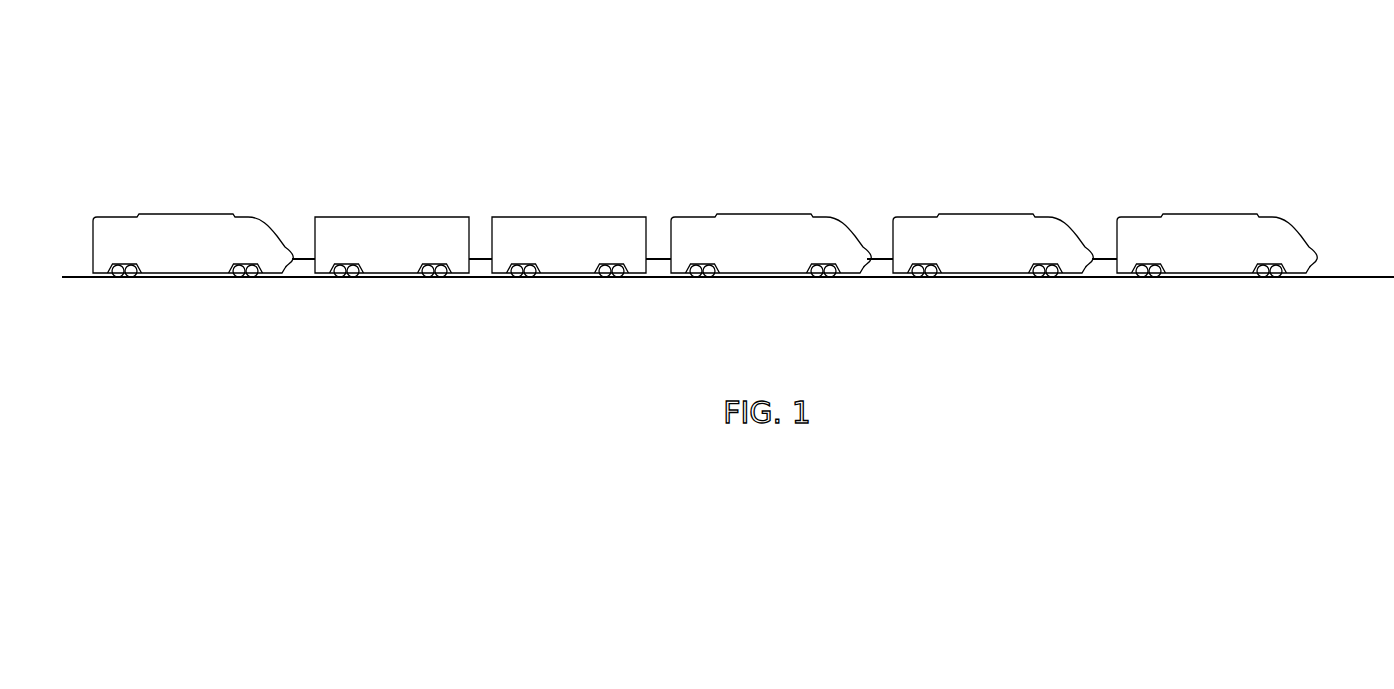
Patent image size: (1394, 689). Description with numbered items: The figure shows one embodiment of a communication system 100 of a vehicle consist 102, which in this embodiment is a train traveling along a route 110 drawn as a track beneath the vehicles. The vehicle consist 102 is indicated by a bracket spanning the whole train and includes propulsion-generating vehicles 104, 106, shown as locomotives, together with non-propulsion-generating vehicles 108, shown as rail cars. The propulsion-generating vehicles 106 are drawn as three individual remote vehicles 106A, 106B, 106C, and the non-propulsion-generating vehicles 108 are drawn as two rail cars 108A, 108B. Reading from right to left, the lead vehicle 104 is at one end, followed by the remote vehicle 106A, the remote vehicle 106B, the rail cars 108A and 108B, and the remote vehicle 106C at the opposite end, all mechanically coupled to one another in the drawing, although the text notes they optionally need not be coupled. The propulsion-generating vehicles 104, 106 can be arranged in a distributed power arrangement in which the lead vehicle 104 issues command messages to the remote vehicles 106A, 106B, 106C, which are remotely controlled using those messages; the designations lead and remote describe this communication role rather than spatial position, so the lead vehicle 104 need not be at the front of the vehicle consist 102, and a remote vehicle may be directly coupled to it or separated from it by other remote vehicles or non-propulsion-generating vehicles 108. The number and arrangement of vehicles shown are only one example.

The communication system 100 is at (1227, 77).
The vehicle consist 102 is at (92, 301).
The lead vehicle 104 is at (1209, 213).
The propulsion-generating vehicles 106 is at (1062, 193).
The remote vehicle 106A is at (986, 213).
The remote vehicle 106B is at (762, 213).
The remote vehicle 106C is at (185, 213).
The non-propulsion-generating vehicles 108 is at (627, 193).
The non-propulsion-generating vehicle 108A is at (568, 217).
The non-propulsion-generating vehicle 108B is at (391, 217).
The route 110 is at (1362, 276).